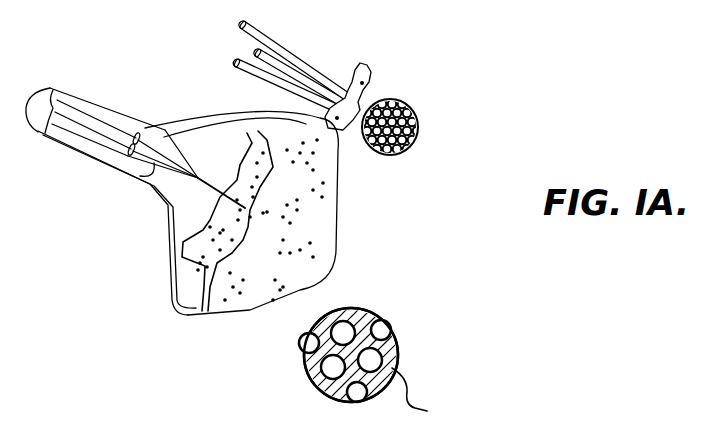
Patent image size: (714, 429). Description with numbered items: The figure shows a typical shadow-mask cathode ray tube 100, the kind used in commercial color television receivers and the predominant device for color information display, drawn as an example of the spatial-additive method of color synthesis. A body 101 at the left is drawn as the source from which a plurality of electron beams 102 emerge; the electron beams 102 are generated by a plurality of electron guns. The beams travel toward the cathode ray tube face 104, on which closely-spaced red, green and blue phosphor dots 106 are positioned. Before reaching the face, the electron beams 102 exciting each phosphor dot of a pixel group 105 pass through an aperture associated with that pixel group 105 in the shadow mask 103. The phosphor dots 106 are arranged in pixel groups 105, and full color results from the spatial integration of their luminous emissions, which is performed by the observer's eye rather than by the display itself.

The shadow-mask cathode ray tube 100 is at (136, 206).
The writing instrument body 101 is at (97, 112).
The electron beam 102 is at (297, 55).
The shadow mask 103 is at (377, 63).
The cathode ray tube face 104 is at (417, 136).
The pixel group 105 is at (393, 100).
The phosphor dots 106 is at (432, 394).